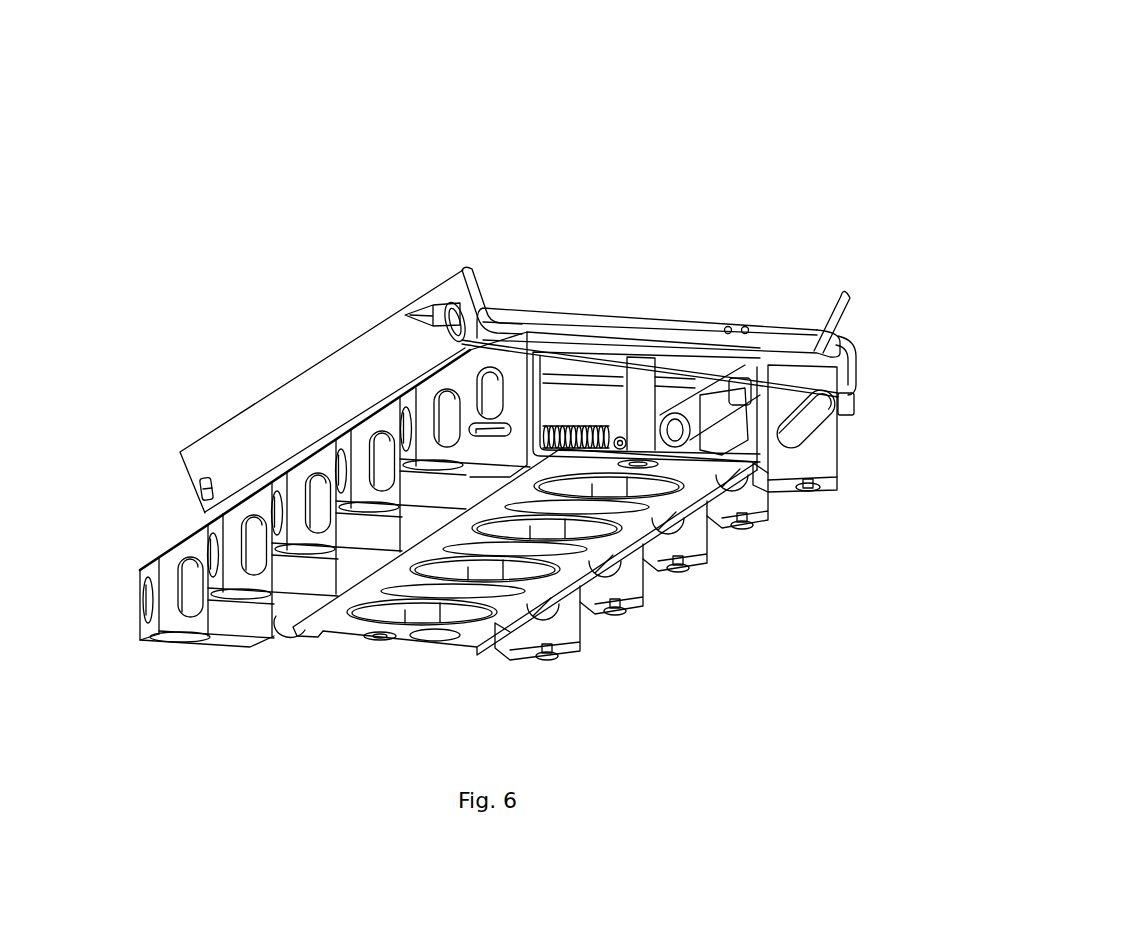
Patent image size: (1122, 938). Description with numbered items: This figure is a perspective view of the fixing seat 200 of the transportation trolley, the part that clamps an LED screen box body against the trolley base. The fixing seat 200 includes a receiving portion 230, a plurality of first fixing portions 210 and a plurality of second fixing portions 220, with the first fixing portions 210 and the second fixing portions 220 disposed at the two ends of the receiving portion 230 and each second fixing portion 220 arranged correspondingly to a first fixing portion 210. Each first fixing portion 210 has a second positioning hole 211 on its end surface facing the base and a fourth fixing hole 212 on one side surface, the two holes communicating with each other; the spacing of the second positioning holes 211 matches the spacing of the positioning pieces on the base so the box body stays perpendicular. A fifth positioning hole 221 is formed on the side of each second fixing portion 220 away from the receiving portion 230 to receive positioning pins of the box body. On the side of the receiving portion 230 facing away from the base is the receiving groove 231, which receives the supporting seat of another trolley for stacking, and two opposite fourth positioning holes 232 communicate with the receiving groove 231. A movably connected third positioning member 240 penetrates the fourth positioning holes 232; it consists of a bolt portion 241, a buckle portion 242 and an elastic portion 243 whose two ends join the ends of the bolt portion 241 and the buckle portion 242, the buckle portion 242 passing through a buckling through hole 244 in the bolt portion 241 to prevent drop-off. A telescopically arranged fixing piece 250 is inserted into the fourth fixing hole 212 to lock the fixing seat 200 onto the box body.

The fixing seat 200 is at (510, 55).
The first fixing portion 210 is at (170, 567).
The second positioning hole 211 is at (172, 640).
The fourth fixing hole 212 is at (148, 600).
The second fixing portion 220 is at (820, 458).
The fifth positioning hole 221 is at (823, 488).
The receiving portion 230 is at (310, 397).
The receiving groove 231 is at (727, 292).
The fourth positioning hole 232 is at (792, 326).
The third positioning member 240 is at (331, 103).
The bolt portion 241 is at (553, 317).
The buckle portion 242 is at (458, 303).
The elastic portion 243 is at (517, 317).
The buckling through hole 244 is at (417, 312).
The fixing piece 250 is at (577, 433).